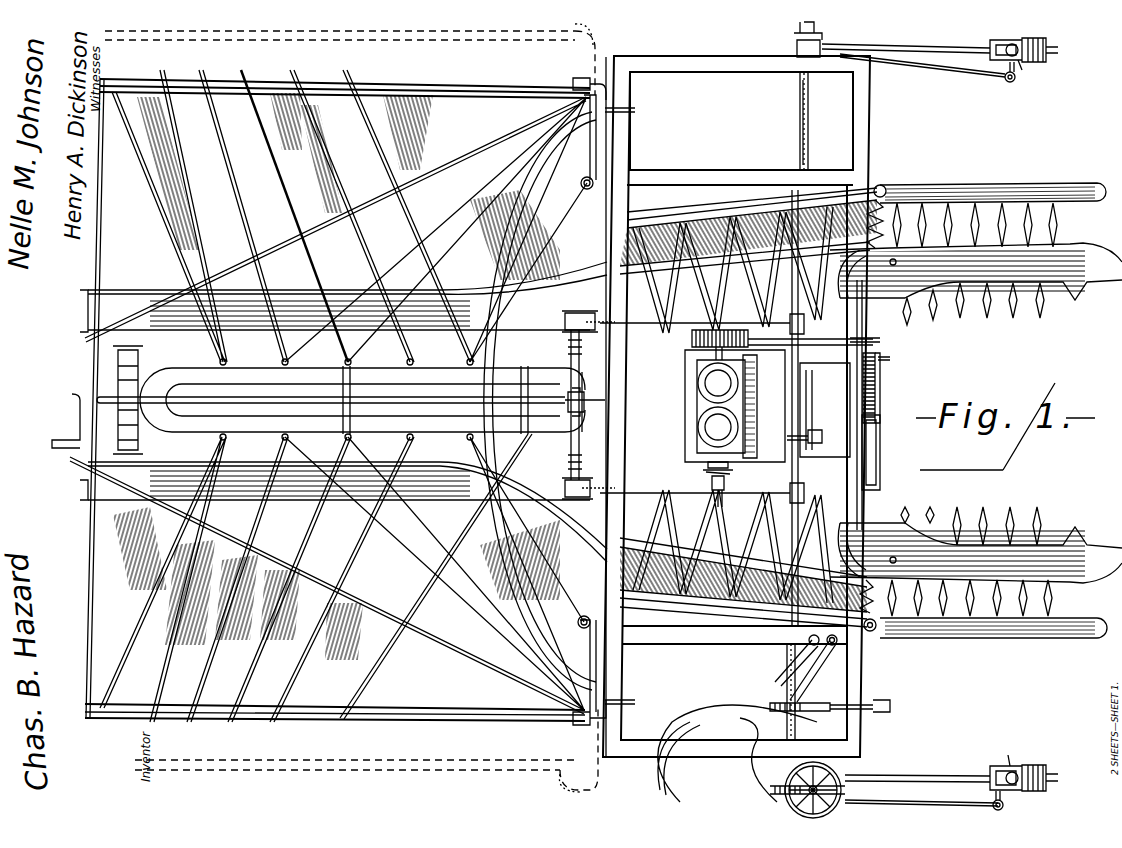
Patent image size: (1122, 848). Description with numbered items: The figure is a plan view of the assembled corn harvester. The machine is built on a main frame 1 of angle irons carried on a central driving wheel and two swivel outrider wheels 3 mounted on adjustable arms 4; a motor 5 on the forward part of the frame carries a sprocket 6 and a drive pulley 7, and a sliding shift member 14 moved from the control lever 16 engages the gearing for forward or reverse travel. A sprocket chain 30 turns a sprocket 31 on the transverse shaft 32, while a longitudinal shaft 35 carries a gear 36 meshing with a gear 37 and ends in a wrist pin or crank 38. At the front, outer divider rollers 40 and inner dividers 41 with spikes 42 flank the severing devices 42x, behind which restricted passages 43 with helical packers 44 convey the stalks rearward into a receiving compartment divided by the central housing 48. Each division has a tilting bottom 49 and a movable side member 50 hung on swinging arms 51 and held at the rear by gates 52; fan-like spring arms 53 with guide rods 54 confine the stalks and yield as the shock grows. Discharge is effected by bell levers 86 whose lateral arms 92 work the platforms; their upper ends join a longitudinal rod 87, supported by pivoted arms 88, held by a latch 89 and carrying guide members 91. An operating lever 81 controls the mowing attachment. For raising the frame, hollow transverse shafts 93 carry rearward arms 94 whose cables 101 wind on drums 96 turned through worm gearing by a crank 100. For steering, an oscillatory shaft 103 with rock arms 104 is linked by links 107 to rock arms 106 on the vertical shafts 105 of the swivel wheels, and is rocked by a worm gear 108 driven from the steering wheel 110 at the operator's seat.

The main frame 1 is at (694, 68).
The swivel outrider wheels 3 is at (1048, 62).
The adjustable arms 4 is at (926, 44).
The motor 5 is at (740, 408).
The sprocket 6 is at (733, 471).
The drive pulley 7 is at (724, 497).
The sliding shift member 14 is at (812, 432).
The control lever 16 is at (816, 684).
The sprocket chain 30 is at (812, 340).
The sprocket 31 is at (880, 342).
The transverse shaft 32 is at (882, 420).
The longitudinal shaft 35 is at (826, 372).
The gear 36 is at (877, 373).
The gear 37 is at (878, 403).
The wrist pin or crank 38 is at (892, 357).
The rollers 40 is at (1034, 183).
The innermost dividers 41 is at (1050, 250).
The spikes or fingers 42 is at (1060, 228).
The severing devices 42x is at (882, 188).
The restricted passage or chute 43 is at (672, 222).
The helical packers 44 is at (806, 290).
The housing 48 is at (347, 412).
The tilting bottom 49 is at (378, 396).
The movable side member 50 is at (492, 94).
The swinging arms 51 is at (612, 96).
The transverse links or gates 52 is at (94, 232).
The flexible spring arms 53 is at (190, 258).
The reciprocating guide rod 54 is at (148, 181).
The operating lever 81 is at (876, 711).
The bell levers 86 is at (568, 500).
The longitudinal rod 87 is at (378, 402).
The pivoted arms 88 is at (118, 373).
The pivoted latch 89 is at (586, 410).
The guide members 91 is at (445, 437).
The lateral arms 92 is at (584, 333).
The hollow transverse shafts 93 is at (810, 132).
The rearward extending arm 94 is at (686, 322).
The drums 96 is at (565, 313).
The crank 100 is at (75, 398).
The cables 101 is at (594, 312).
The oscillatory shaft 103 is at (803, 108).
The rock arm 104 is at (800, 33).
The vertical shaft 105 is at (1020, 72).
The rock arm 106 is at (1007, 82).
The links 107 is at (938, 68).
The worm gear 108 is at (758, 790).
The steering wheel 110 is at (815, 770).